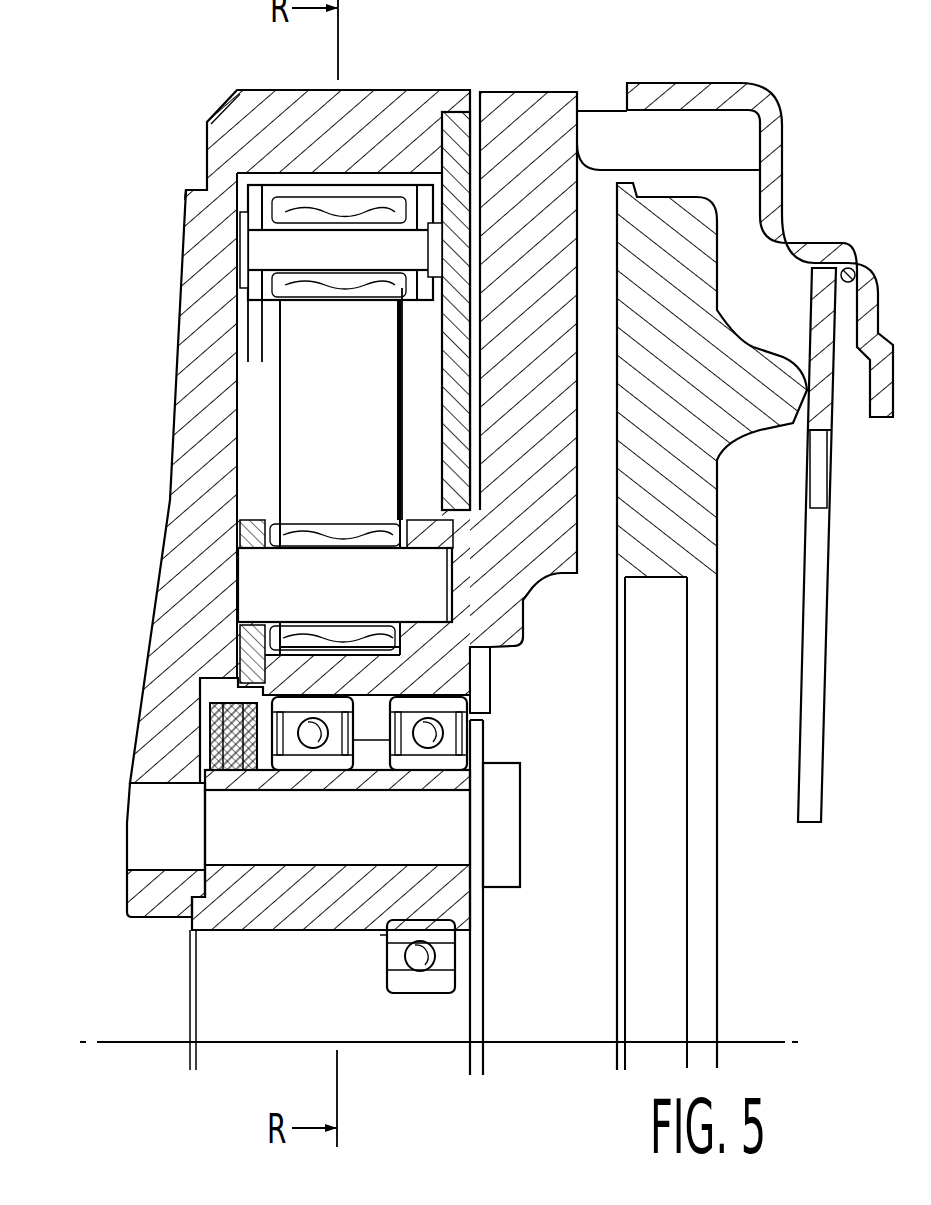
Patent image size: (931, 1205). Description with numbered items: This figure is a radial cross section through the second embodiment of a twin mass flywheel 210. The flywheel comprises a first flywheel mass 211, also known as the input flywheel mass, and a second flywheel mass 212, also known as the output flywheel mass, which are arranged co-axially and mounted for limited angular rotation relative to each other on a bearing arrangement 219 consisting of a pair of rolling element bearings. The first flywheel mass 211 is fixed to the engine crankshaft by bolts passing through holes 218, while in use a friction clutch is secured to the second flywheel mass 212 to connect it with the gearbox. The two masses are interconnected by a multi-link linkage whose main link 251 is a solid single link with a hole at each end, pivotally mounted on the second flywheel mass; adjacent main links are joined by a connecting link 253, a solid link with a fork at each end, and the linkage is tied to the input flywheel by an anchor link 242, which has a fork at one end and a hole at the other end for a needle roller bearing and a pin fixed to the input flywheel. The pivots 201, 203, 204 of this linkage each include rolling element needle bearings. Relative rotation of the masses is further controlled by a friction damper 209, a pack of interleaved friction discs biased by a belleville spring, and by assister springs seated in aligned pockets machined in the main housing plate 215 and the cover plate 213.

The twin mass flywheel 210 is at (163, 130).
The first flywheel mass 211 is at (185, 200).
The second flywheel mass 212 is at (533, 91).
The cover plate 213 is at (455, 133).
The main housing plate 215 is at (180, 473).
The pivot 203 is at (237, 242).
The pivot 204 is at (237, 263).
The anchor link 242 is at (253, 298).
The connecting link 253 is at (262, 320).
The main link 251 is at (293, 410).
The pivot 201 is at (235, 601).
The friction damper 209 is at (203, 740).
The bearing arrangement 219 is at (487, 730).
The holes 218 is at (285, 865).